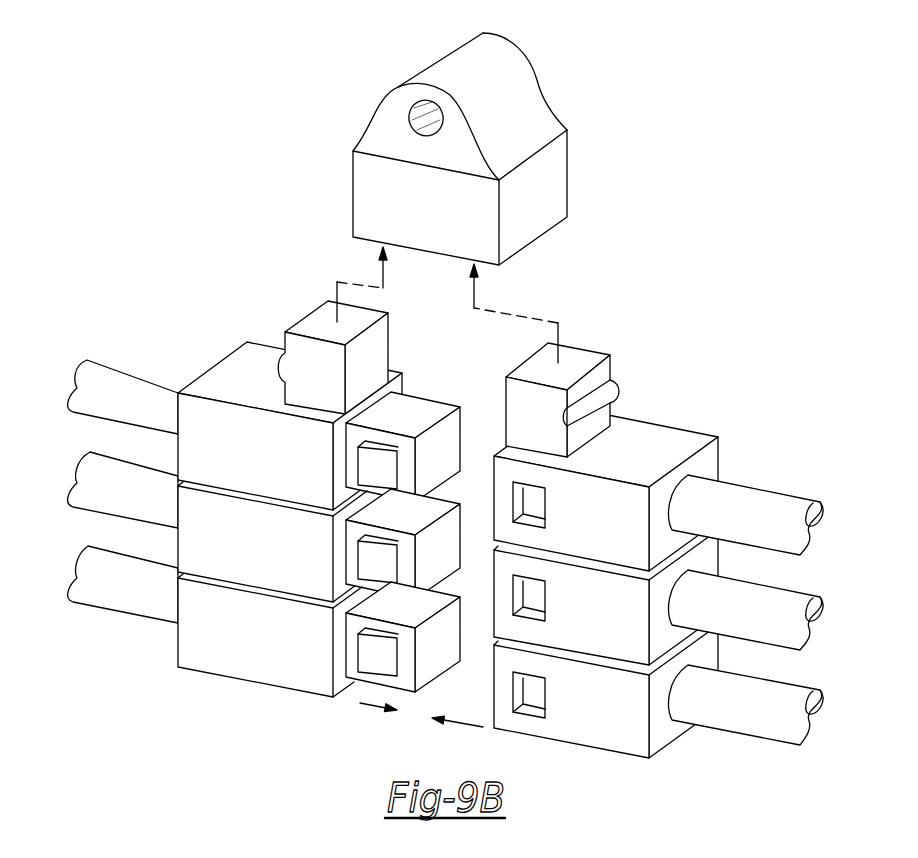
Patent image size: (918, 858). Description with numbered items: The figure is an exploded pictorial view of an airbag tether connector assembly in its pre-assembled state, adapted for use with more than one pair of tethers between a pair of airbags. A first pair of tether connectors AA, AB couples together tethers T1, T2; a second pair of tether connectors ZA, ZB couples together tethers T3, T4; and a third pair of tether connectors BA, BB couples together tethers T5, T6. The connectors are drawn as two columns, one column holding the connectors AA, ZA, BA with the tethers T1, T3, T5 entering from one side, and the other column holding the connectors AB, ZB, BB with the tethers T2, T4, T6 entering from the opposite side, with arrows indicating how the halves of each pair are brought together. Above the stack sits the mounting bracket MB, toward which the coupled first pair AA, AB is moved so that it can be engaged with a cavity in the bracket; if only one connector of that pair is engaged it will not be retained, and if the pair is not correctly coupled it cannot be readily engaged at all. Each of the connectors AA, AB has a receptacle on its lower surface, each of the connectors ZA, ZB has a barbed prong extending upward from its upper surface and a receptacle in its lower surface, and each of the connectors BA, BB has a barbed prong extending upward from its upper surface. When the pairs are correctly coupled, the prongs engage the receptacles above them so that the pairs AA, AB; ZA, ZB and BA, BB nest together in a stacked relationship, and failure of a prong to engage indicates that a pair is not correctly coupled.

The mounting bracket MB is at (378, 124).
The tether T1 is at (147, 363).
The tether T2 is at (777, 492).
The tether T3 is at (92, 462).
The tether T4 is at (797, 600).
The tether T5 is at (122, 612).
The tether T6 is at (748, 735).
The tether connector AA is at (268, 467).
The tether connector ZA is at (268, 560).
The tether connector BA is at (268, 657).
The tether connector AB is at (598, 532).
The tether connector ZB is at (596, 625).
The tether connector BB is at (596, 720).